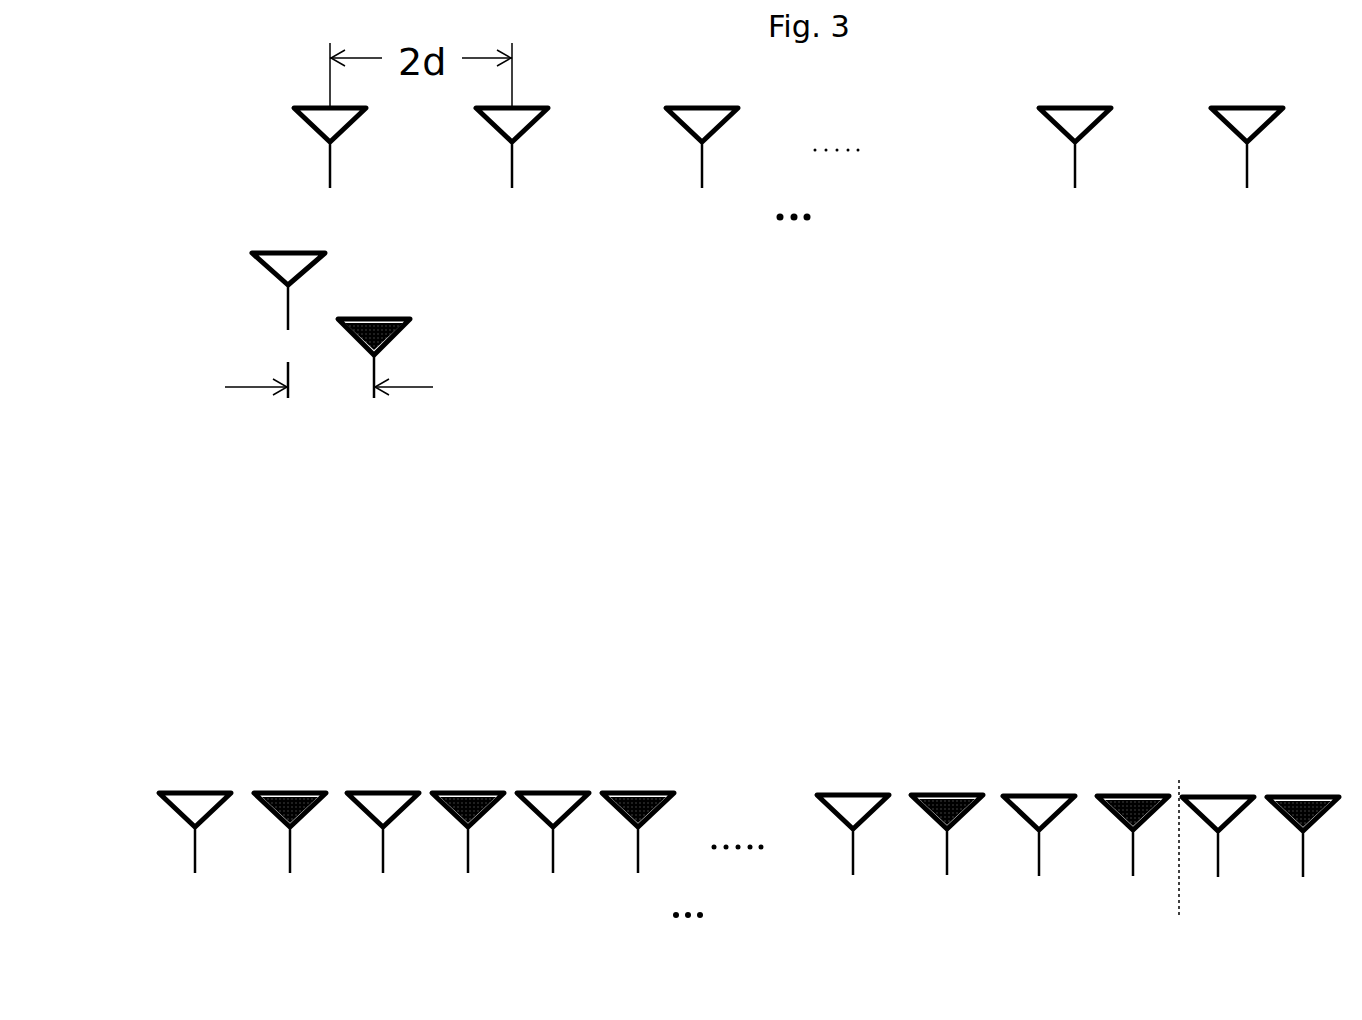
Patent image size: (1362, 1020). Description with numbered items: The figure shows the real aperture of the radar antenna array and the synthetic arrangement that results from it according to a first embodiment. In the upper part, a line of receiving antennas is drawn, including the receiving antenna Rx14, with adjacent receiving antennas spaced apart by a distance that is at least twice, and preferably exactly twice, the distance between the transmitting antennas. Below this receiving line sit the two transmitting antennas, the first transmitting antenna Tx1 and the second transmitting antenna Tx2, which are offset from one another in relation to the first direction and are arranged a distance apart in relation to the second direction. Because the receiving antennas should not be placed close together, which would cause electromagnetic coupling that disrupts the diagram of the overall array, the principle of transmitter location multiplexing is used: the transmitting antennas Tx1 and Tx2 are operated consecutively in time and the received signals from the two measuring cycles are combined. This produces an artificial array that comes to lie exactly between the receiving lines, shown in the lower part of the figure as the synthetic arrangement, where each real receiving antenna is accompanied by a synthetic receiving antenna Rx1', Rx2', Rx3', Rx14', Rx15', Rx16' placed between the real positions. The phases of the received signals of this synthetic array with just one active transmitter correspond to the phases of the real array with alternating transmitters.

The fourteenth receive antenna Rx14 is at (853, 857).
The first virtual receive antenna Rx1' is at (290, 856).
The second virtual receive antenna Rx2' is at (468, 856).
The third virtual receive antenna Rx3' is at (638, 856).
The fourteenth virtual receive antenna Rx14' is at (947, 857).
The fifteenth virtual receive antenna Rx15' is at (1133, 857).
The sixteenth virtual receive antenna Rx16' is at (1303, 858).
The first transmit antenna Tx1 is at (275, 344).
The second transmit antenna Tx2 is at (396, 392).